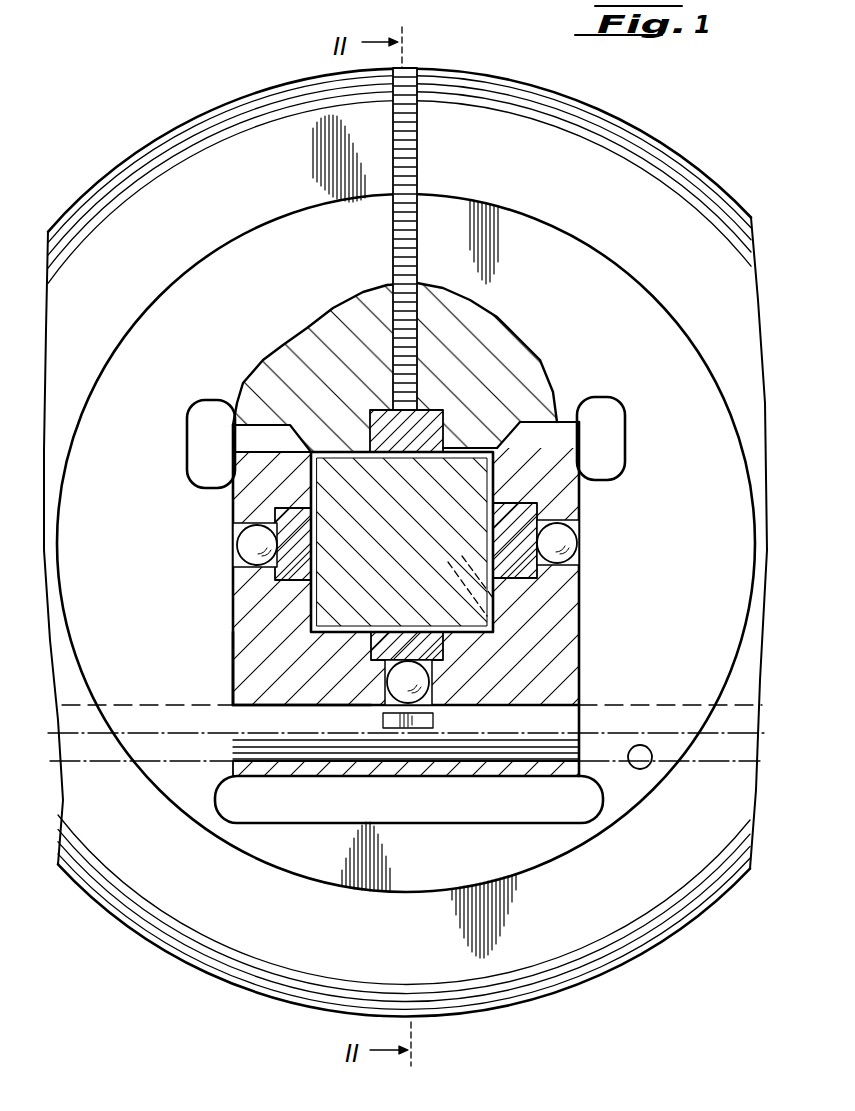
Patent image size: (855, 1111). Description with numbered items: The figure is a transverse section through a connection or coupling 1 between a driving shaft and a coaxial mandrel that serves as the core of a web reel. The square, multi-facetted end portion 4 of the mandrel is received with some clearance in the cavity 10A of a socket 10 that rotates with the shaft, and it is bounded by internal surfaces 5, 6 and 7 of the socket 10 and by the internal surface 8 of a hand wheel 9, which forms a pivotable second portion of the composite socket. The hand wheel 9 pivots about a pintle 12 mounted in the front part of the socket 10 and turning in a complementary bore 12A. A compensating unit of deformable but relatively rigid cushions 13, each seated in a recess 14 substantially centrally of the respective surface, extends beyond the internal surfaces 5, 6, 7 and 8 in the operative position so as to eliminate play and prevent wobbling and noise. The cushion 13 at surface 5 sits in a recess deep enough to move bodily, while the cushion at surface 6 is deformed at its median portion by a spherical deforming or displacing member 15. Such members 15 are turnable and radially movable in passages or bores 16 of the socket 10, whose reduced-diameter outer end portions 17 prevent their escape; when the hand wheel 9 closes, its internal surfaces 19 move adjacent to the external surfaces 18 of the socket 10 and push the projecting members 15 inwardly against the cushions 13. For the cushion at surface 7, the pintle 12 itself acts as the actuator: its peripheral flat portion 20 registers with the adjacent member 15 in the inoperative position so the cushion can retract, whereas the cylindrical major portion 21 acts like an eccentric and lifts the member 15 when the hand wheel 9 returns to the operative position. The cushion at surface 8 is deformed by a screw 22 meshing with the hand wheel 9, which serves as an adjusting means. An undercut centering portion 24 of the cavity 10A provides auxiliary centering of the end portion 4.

The connection or coupling 1 is at (405, 528).
The multi-facetted end portion 4 is at (402, 525).
The internal surface 5 is at (492, 580).
The internal surface 6 is at (316, 622).
The internal surface 7 is at (343, 635).
The internal surface 8 is at (448, 458).
The hand wheel 9 is at (716, 884).
The socket 10 is at (408, 582).
The cavity 10A is at (476, 442).
The pintle 12 is at (406, 768).
The bore 12A is at (699, 700).
The cushions 13 is at (424, 524).
The recess 14 is at (535, 573).
The spherical deforming or displacing member 15 is at (252, 545).
The passages or bores 16 is at (250, 522).
The outer end portions 17 is at (416, 593).
The external surfaces 18 is at (581, 630).
The internal surfaces 19 is at (237, 498).
The flat portion 20 is at (408, 727).
The cylindrical major portion 21 is at (433, 721).
The screw 22 is at (418, 368).
The undercut centering portion 24 is at (461, 586).